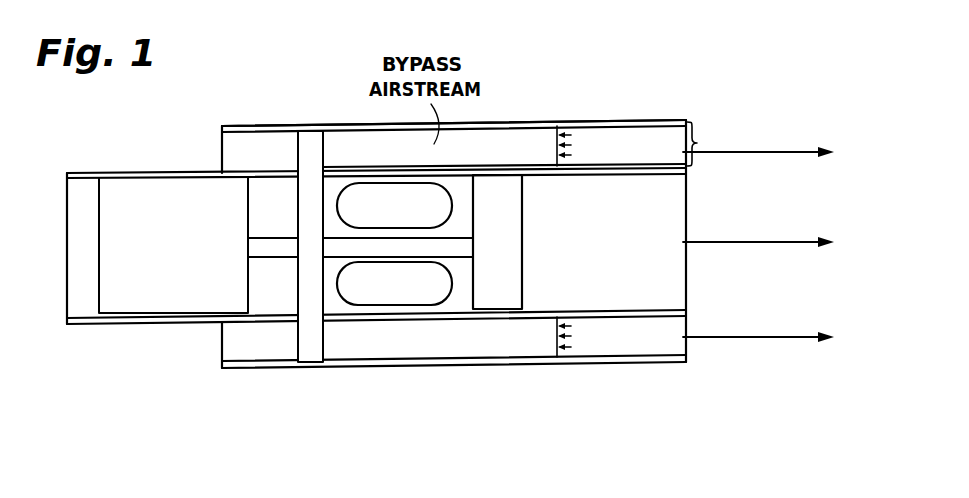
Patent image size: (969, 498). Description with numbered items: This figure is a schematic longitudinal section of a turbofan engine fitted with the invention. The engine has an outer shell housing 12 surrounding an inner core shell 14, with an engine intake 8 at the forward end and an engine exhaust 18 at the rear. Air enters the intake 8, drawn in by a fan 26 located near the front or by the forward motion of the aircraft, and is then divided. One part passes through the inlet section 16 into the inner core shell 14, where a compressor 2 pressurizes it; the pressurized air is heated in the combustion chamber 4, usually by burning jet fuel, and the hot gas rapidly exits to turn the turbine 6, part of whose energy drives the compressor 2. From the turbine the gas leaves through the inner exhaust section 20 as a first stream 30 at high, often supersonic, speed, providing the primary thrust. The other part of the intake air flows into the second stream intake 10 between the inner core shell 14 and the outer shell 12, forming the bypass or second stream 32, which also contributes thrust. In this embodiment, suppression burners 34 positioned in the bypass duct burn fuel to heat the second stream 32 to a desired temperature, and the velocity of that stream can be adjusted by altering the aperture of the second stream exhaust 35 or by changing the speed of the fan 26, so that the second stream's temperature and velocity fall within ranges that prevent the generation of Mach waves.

The compressor 2 is at (161, 284).
The combustion chamber 4 is at (407, 210).
The turbine 6 is at (510, 382).
The engine intake 8 is at (58, 127).
The second stream intake 10 is at (217, 131).
The outer shell housing 12 is at (528, 122).
The inner core shell 14 is at (607, 326).
The inlet section 16 is at (86, 191).
The engine exhaust 18 is at (833, 118).
The inner exhaust section 20 is at (547, 175).
The fan 26 is at (311, 138).
The first stream 30 is at (792, 243).
The second stream 32 is at (778, 350).
The suppression burners 34 is at (578, 146).
The second stream exhaust 35 is at (691, 122).